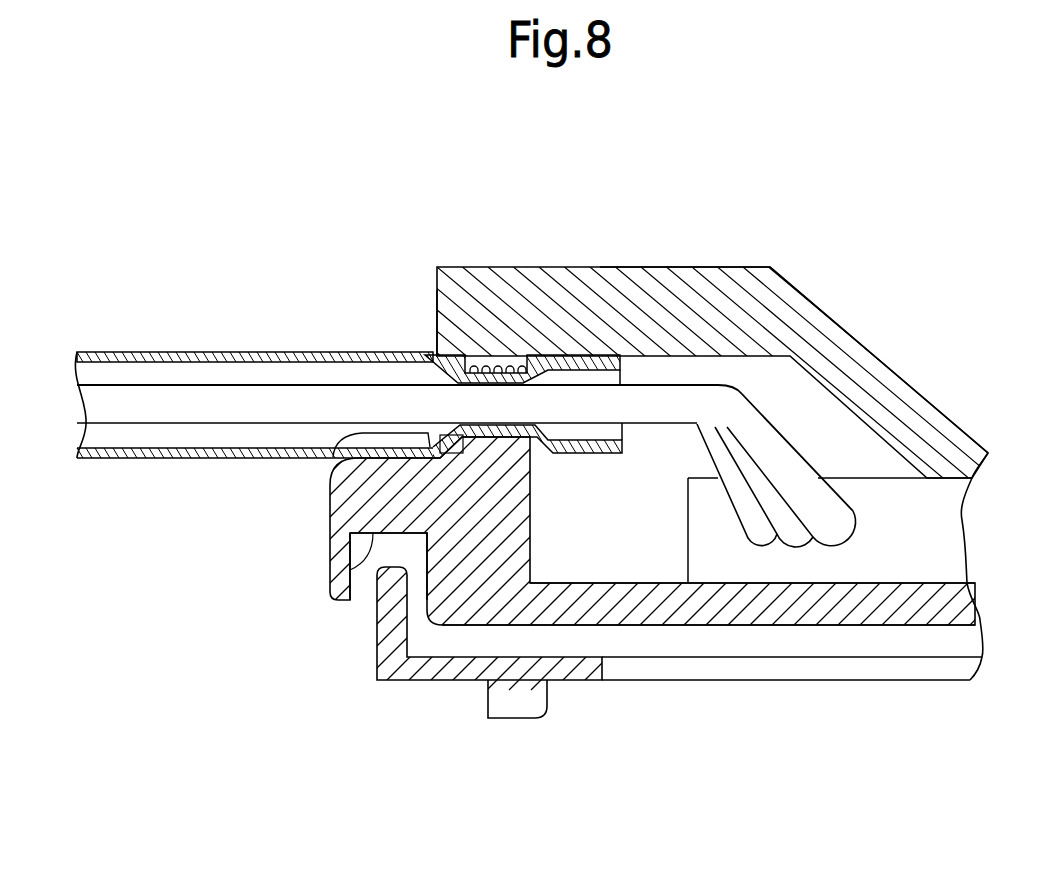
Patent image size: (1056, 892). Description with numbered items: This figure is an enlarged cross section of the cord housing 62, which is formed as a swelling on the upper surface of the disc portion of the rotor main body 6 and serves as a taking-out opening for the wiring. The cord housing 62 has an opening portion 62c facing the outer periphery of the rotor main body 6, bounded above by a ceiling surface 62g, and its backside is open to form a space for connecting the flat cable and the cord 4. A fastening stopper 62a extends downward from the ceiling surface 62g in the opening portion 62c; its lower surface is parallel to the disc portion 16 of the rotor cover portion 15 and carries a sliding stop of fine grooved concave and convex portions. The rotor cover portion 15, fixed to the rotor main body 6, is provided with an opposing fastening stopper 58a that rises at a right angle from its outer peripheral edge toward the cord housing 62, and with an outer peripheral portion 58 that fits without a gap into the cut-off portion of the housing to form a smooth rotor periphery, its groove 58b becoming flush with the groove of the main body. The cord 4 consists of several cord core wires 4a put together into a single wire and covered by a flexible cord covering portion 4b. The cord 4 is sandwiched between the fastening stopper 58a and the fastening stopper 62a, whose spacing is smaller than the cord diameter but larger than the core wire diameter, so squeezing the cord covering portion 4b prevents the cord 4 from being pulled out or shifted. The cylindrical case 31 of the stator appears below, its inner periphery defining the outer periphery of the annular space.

The cord 4 is at (211, 340).
The cord core wires 4a is at (130, 400).
The cord covering portion 4b is at (268, 353).
The rotor main body 6 is at (903, 362).
The rotor cover portion 15 is at (945, 572).
The disc portion 16 is at (647, 607).
The case 31 is at (506, 718).
The outer peripheral portion 58 is at (308, 585).
The fastening stopper 58a is at (430, 441).
The groove 58b is at (353, 575).
The cord housing 62 is at (563, 288).
The fastening stopper 62a is at (496, 355).
The opening portion 62c is at (437, 330).
The ceiling surface 62g is at (648, 267).